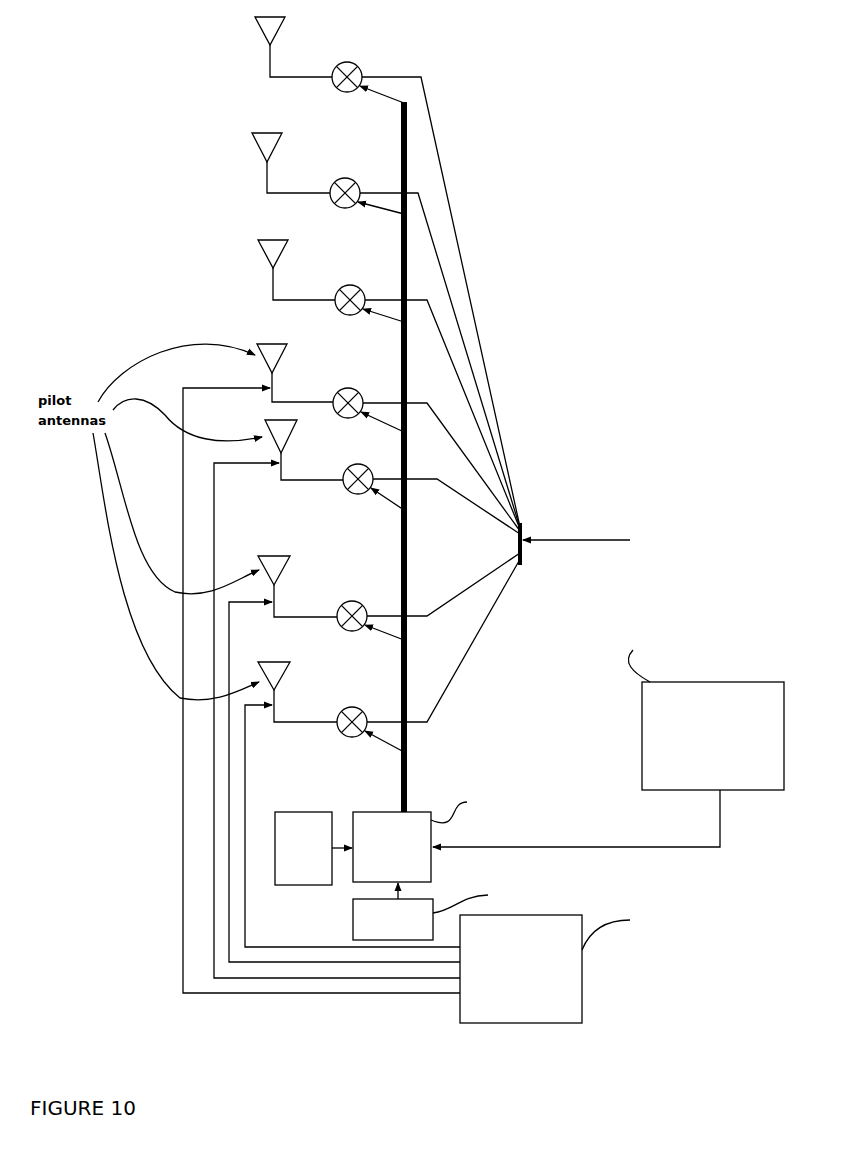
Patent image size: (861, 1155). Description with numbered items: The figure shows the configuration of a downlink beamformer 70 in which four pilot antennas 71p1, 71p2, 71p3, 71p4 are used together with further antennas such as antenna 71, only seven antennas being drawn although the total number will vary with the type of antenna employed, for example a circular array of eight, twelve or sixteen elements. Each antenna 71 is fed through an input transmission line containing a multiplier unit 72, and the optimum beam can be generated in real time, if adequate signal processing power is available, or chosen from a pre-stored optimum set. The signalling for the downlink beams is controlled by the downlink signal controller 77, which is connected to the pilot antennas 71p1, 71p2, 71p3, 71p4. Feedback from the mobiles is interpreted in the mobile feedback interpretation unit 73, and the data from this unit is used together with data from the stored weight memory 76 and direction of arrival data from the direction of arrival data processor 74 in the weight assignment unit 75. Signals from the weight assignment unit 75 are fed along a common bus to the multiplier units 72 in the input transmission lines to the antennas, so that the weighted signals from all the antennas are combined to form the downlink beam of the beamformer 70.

The downlink beamformer 70 is at (592, 248).
The antenna 71 is at (258, 28).
The multiplier unit 72 is at (346, 55).
The pilot antenna 71p1 is at (352, 804).
The pilot antenna 71p2 is at (344, 759).
The pilot antenna 71p3 is at (337, 699).
The pilot antenna 71p4 is at (321, 668).
The mobile feedback interpretation unit 73 is at (608, 728).
The direction of arrival data processor 74 is at (324, 816).
The weight assignment unit 75 is at (483, 837).
The stored weight memory 76 is at (451, 911).
The downlink signal controller 77 is at (604, 964).